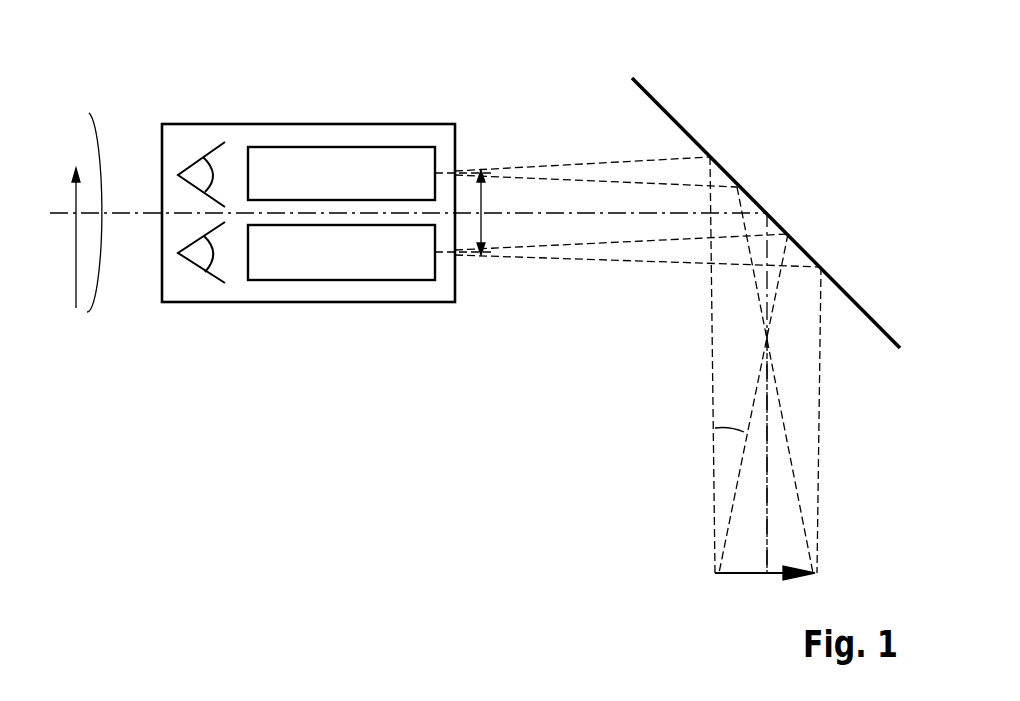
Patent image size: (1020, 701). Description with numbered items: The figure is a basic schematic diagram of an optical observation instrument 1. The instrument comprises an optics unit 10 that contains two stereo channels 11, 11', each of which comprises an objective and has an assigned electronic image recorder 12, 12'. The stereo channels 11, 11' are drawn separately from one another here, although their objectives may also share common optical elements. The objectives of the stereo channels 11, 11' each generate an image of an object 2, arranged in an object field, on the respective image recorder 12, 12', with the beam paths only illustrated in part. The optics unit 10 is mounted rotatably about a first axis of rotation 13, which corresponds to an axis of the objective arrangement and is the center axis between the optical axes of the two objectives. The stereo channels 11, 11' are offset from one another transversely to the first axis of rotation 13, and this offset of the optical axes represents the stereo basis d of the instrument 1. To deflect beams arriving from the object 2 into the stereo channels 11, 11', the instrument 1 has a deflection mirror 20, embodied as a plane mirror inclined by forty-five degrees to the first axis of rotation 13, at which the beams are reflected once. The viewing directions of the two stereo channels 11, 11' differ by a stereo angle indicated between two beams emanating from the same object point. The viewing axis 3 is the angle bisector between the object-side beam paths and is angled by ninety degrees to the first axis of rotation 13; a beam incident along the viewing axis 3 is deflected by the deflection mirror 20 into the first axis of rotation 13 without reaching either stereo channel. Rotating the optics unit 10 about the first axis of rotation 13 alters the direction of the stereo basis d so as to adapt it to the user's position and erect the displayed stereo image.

The optical observation instrument 1 is at (570, 85).
The object 2 is at (737, 578).
The viewing axis 3 is at (767, 482).
The optics unit 10 is at (414, 108).
The stereo channel 11 is at (370, 139).
The stereo channel 11' is at (370, 291).
The electronic image recorder 12 is at (201, 145).
The electronic image recorder 12' is at (204, 286).
The first axis of rotation 13 is at (131, 203).
The deflection mirror 20 is at (657, 100).
The stereo basis d is at (490, 212).